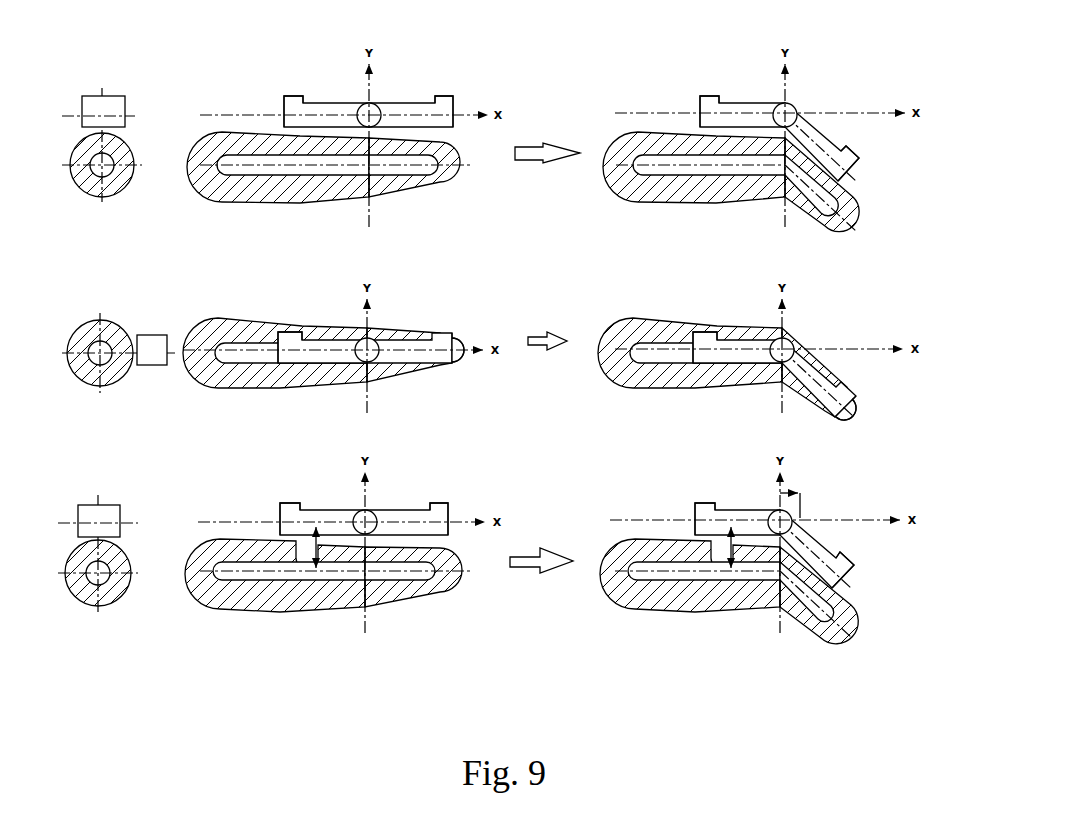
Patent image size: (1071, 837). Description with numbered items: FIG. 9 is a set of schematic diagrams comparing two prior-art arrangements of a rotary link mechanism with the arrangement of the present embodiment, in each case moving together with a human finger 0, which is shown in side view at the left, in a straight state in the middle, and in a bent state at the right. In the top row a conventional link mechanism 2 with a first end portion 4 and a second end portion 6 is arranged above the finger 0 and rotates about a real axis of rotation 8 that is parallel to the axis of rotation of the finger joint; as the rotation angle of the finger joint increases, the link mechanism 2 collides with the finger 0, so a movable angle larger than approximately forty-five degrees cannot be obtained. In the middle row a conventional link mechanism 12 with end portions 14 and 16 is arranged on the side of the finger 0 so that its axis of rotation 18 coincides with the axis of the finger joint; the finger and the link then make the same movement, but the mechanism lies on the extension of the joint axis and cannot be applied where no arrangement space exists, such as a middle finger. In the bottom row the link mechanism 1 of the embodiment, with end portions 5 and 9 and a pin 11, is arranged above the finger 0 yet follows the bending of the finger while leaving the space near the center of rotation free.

The base member 0 is at (226, 204).
The movable member 2 is at (113, 105).
The end portion of movable member 4 is at (290, 98).
The end portion of movable member 6 is at (448, 94).
The pivot 8 is at (372, 103).
The movable member 12 is at (151, 330).
The end portion of movable member 14 is at (291, 330).
The rounded end of movable member 16 is at (444, 332).
The pivot 18 is at (358, 333).
The movable member 1 is at (110, 504).
The end portion of movable member 5 is at (285, 503).
The end portion of movable member 9 is at (446, 503).
The pivot pin 11 is at (358, 509).